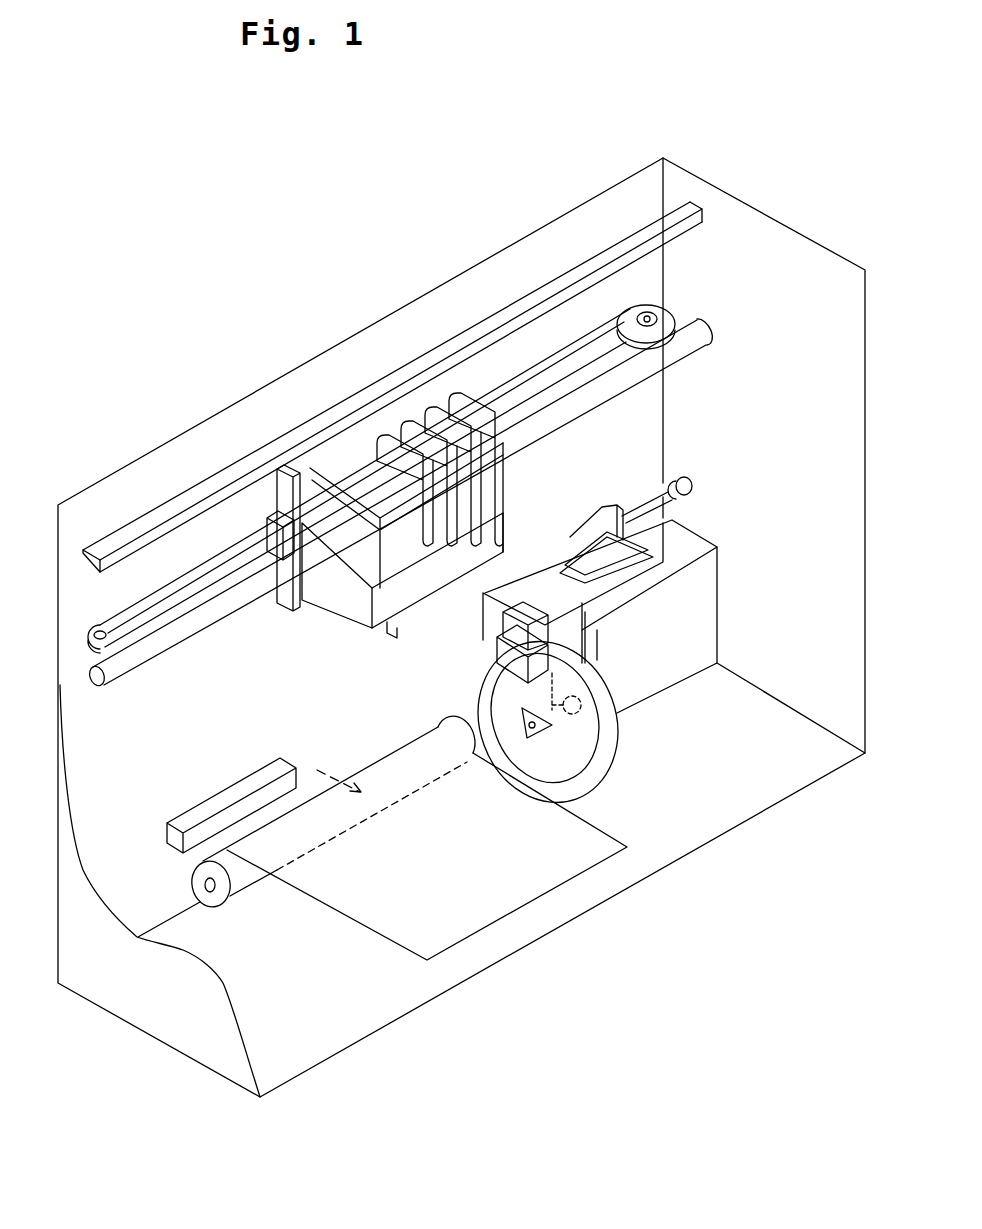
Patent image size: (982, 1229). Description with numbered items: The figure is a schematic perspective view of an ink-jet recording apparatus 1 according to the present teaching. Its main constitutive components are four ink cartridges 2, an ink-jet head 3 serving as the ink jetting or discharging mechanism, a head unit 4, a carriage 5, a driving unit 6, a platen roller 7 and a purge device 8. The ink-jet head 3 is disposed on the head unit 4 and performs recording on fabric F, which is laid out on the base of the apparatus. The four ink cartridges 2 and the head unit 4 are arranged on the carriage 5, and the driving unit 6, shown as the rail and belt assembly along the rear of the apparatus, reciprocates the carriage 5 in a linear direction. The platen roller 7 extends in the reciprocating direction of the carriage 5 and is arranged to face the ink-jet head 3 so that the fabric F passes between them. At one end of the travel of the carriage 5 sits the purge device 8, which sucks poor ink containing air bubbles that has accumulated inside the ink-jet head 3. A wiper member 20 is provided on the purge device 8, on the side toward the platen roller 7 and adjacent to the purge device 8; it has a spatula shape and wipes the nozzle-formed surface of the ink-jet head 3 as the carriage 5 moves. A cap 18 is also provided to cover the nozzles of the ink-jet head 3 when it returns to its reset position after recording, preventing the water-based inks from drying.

The ink-jet recording apparatus 1 is at (357, 192).
The ink cartridge 2 is at (357, 493).
The ink-jet head 3 is at (443, 597).
The head unit 4 is at (430, 630).
The carriage 5 is at (287, 485).
The driving unit 6 is at (688, 187).
The platen roller 7 is at (247, 875).
The purge device 8 is at (620, 837).
The cap 18 is at (612, 557).
The wiper member 20 is at (527, 640).
The fabric F is at (412, 932).